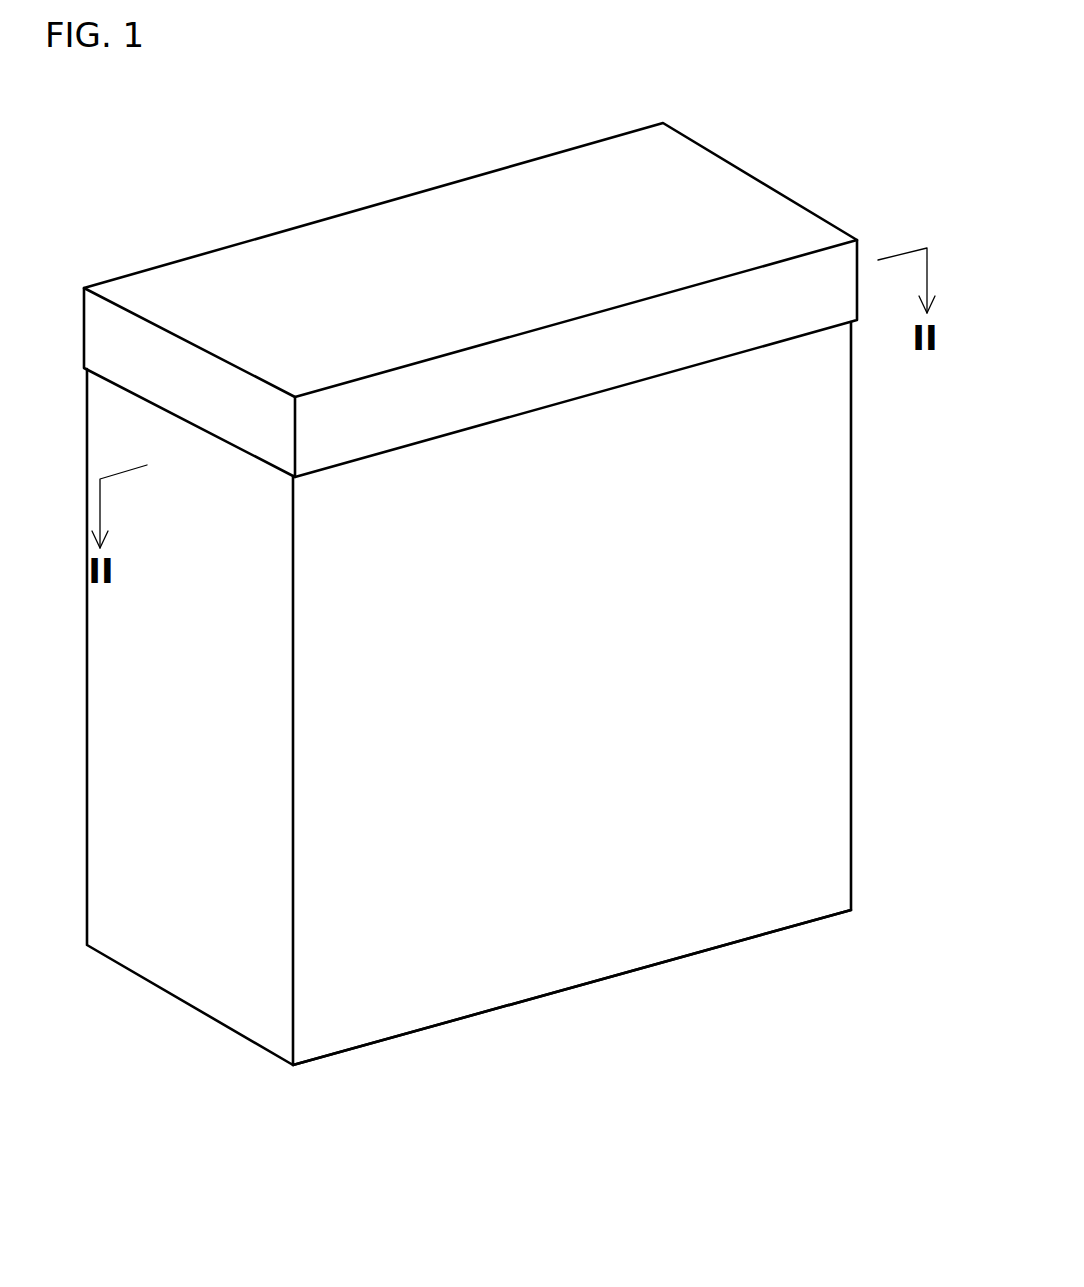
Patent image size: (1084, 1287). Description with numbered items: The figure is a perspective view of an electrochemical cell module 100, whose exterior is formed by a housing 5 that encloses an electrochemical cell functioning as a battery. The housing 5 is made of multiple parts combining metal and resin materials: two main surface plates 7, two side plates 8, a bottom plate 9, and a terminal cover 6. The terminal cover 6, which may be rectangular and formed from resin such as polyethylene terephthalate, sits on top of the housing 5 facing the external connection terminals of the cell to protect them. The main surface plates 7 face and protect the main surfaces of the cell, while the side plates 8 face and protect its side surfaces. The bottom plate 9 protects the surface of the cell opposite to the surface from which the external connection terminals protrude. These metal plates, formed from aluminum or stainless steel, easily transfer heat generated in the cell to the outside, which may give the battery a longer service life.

The electrochemical cell module 100 is at (252, 152).
The housing 5 is at (868, 431).
The terminal cover 6 is at (760, 218).
The main surface plate 7 is at (178, 957).
The side plate 8 is at (557, 922).
The bottom plate 9 is at (728, 945).